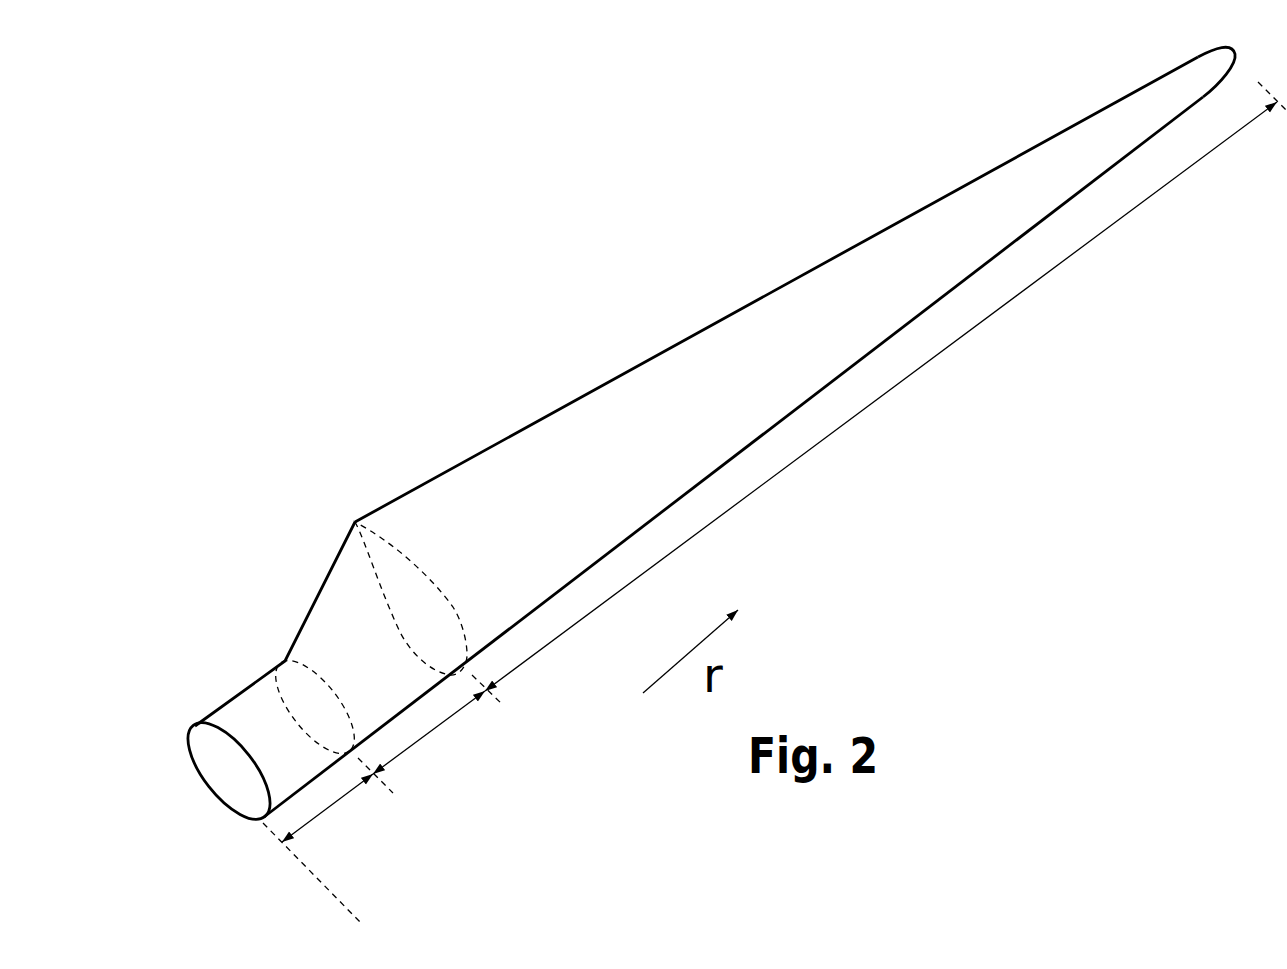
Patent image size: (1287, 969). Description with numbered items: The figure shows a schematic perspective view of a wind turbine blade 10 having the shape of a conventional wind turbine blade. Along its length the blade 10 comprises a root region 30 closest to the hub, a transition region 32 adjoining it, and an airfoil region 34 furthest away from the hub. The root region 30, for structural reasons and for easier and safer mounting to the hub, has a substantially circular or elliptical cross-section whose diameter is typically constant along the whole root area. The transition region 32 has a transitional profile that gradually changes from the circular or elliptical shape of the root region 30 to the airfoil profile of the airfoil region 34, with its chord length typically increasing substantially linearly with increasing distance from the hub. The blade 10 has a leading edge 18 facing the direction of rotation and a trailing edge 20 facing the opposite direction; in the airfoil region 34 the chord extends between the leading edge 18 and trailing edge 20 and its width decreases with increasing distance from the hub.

The wind turbine blade 10 is at (513, 300).
The leading edge 18 is at (917, 317).
The trailing edge 20 is at (924, 208).
The root region 30 is at (331, 806).
The transition region 32 is at (435, 729).
The airfoil region 34 is at (802, 455).